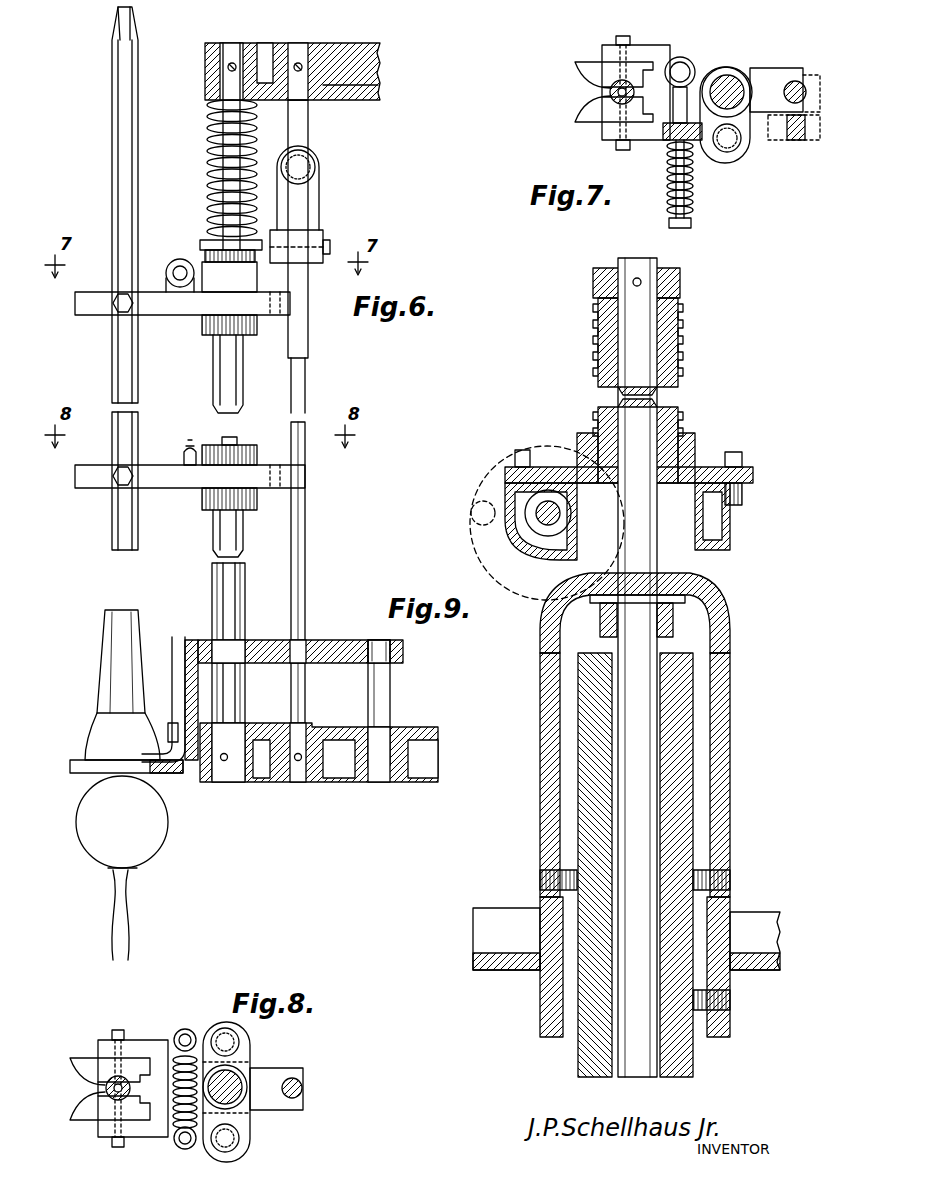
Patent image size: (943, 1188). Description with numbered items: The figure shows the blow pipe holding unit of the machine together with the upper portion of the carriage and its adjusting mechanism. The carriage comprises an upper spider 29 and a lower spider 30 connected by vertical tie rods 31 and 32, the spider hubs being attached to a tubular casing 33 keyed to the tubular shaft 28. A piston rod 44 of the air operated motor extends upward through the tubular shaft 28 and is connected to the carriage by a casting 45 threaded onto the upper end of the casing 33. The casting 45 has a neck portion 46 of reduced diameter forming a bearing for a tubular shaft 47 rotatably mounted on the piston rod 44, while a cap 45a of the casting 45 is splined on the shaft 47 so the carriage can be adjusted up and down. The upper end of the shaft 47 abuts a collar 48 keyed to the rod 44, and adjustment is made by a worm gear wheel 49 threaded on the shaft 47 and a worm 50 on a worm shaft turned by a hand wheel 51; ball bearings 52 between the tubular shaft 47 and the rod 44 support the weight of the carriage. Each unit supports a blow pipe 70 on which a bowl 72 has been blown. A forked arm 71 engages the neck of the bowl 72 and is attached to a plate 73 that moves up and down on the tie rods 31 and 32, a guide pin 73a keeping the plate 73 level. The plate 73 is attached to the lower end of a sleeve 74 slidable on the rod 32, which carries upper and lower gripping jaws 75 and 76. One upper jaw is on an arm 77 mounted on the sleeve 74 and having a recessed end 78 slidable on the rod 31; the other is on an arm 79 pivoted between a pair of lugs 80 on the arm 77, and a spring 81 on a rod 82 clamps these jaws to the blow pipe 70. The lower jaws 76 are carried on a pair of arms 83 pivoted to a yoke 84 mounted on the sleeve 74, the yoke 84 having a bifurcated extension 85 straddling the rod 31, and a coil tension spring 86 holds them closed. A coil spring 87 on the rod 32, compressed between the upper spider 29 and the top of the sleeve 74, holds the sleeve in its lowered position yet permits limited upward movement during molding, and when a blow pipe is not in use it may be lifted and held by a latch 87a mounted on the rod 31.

In FIG. 9, the tubular shaft 28 is at (690, 830).
In FIG. 6, the upper spider 29 is at (372, 100).
In FIG. 9, the upper spider 29 is at (490, 925).
In FIG. 6, the lower spider 30 is at (425, 724).
In FIG. 6, the tie rod 31 is at (300, 560).
In FIG. 7, the tie rod 31 is at (808, 92).
In FIG. 8, the tie rod 31 is at (305, 1088).
In FIG. 6, the tie rod 32 is at (220, 604).
In FIG. 7, the tie rod 32 is at (750, 80).
In FIG. 9, the tubular shaft or casing 33 is at (720, 1044).
In FIG. 9, the piston rod 44 is at (660, 392).
In FIG. 9, the casting 45 is at (725, 698).
In FIG. 9, the cap 45a is at (700, 455).
In FIG. 9, the neck portion 46 is at (712, 580).
In FIG. 9, the tubular shaft 47 is at (613, 408).
In FIG. 9, the collar 48 is at (683, 283).
In FIG. 9, the worm gear wheel 49 is at (732, 520).
In FIG. 9, the worm 50 is at (540, 535).
In FIG. 9, the hand wheel 51 is at (470, 513).
In FIG. 9, the ball bearings 52 is at (673, 620).
In FIG. 6, the blow pipe 70 is at (118, 358).
In FIG. 7, the blow pipe 70 is at (608, 100).
In FIG. 6, the forked arm 71 is at (178, 768).
In FIG. 6, the bowl 72 is at (165, 838).
In FIG. 6, the plate or bracket 73 is at (355, 640).
In FIG. 6, the guide pin 73a is at (375, 702).
In FIG. 6, the sleeve or tubular shaft 74 is at (242, 612).
In FIG. 7, the sleeve or tubular shaft 74 is at (730, 85).
In FIG. 8, the sleeve or tubular shaft 74 is at (232, 1080).
In FIG. 6, the upper gripping jaws 75 is at (95, 292).
In FIG. 7, the upper gripping jaws 75 is at (590, 86).
In FIG. 6, the lower gripping jaws 76 is at (86, 480).
In FIG. 8, the lower gripping jaws 76 is at (92, 1075).
In FIG. 6, the arm 77 is at (290, 322).
In FIG. 7, the arm 77 is at (690, 70).
In FIG. 7, the recessed end 78 is at (800, 78).
In FIG. 6, the arm 79 is at (176, 315).
In FIG. 7, the arm 79 is at (665, 140).
In FIG. 6, the lugs 80 is at (208, 338).
In FIG. 7, the lugs 80 is at (745, 140).
In FIG. 7, the spring 81 is at (693, 186).
In FIG. 7, the rod 82 is at (667, 190).
In FIG. 6, the arms 83 is at (150, 466).
In FIG. 8, the arms 83 is at (145, 1040).
In FIG. 6, the yoke 84 is at (205, 508).
In FIG. 8, the yoke 84 is at (245, 1120).
In FIG. 8, the extension 85 is at (288, 1075).
In FIG. 6, the coil tension spring 86 is at (190, 446).
In FIG. 8, the coil tension spring 86 is at (178, 1120).
In FIG. 6, the coil spring 87 is at (208, 186).
In FIG. 6, the latch 87a is at (302, 342).
In FIG. 7, the latch 87a is at (797, 140).